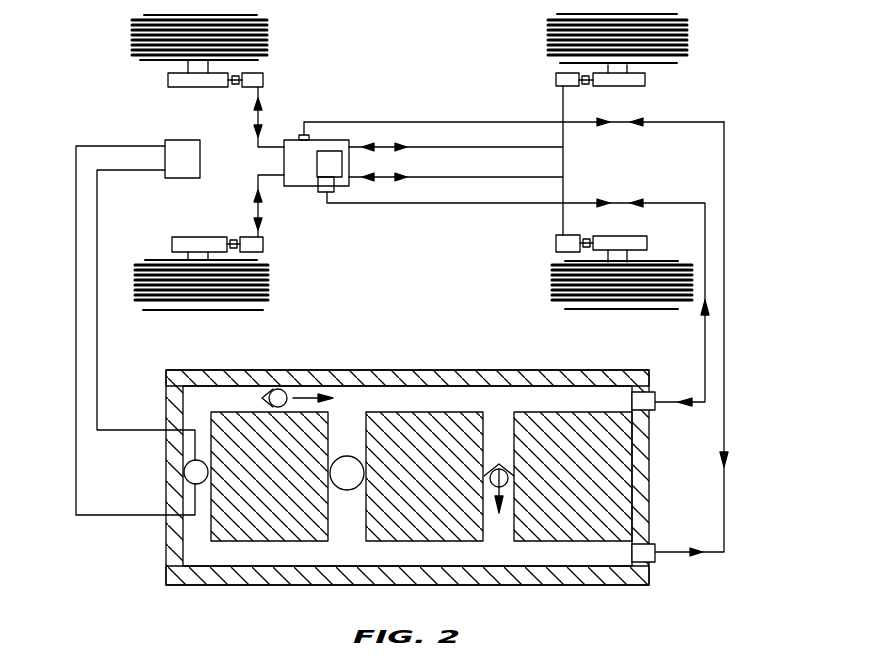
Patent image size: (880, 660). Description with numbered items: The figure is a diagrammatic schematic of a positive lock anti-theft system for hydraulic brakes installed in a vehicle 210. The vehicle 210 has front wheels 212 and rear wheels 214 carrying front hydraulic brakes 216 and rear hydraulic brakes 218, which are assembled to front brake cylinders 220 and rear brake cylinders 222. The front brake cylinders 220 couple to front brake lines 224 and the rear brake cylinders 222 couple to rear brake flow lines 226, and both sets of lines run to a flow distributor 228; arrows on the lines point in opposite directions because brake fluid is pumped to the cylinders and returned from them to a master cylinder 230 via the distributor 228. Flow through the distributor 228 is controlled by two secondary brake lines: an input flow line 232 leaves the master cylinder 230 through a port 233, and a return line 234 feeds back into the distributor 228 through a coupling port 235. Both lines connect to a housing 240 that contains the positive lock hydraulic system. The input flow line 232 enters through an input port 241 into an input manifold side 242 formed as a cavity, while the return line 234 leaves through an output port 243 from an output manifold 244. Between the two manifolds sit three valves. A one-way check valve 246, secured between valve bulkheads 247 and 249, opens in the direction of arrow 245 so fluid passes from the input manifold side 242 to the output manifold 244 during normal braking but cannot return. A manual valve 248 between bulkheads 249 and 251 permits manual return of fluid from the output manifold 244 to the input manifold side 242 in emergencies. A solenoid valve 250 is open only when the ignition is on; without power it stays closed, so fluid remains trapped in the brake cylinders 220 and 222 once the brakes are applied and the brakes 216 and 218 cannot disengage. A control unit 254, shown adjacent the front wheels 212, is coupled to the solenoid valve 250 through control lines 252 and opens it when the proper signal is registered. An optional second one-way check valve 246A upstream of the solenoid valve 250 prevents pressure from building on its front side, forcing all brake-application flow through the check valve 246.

The vehicle 210 is at (399, 78).
The front wheels 212 is at (266, 40).
The rear wheels 214 is at (689, 50).
The front hydraulic brakes 216 is at (168, 80).
The rear hydraulic brakes 218 is at (645, 80).
The front brake cylinders 220 is at (263, 78).
The rear brake cylinders 222 is at (556, 80).
The front brake lines 224 is at (262, 100).
The rear brake flow lines 226 is at (462, 152).
The flow distributor 228 is at (284, 167).
The master cylinder 230 is at (324, 167).
The input flow line 232 is at (705, 270).
The port 233 is at (324, 193).
The return line 234 is at (724, 185).
The coupling port 235 is at (302, 135).
The housing 240 is at (442, 378).
The input port 241 is at (655, 396).
The input manifold side 242 is at (228, 396).
The output port 243 is at (655, 562).
The output manifold 244 is at (312, 560).
The arrow 245 is at (496, 496).
The one-way check valve 246 is at (499, 462).
The second one-way check valve 246A is at (276, 390).
The valve bulkhead 247 is at (542, 515).
The manual valve 248 is at (347, 456).
The valve bulkhead 249 is at (430, 515).
The solenoid valve 250 is at (190, 476).
The bulkhead 251 is at (268, 508).
The control lines 252 is at (76, 310).
The control unit 254 is at (187, 140).